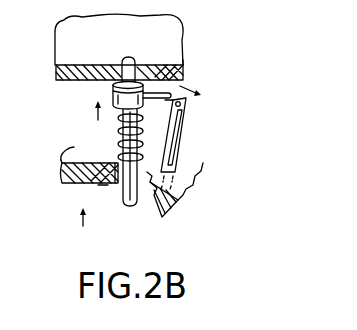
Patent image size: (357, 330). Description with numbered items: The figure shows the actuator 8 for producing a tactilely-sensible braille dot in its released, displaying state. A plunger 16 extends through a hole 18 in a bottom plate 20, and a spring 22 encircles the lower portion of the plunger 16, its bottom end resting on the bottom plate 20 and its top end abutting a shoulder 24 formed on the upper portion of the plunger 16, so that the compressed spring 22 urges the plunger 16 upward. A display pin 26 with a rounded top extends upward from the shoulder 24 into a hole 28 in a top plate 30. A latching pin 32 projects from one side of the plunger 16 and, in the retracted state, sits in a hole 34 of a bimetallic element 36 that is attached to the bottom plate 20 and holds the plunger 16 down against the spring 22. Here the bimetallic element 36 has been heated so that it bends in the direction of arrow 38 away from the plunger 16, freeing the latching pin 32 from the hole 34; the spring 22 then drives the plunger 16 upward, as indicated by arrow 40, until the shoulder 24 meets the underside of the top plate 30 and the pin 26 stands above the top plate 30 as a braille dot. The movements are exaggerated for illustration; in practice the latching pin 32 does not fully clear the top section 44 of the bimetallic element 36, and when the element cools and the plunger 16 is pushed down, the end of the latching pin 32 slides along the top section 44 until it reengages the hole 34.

The actuator 8 is at (115, 222).
The plunger 16 is at (124, 197).
The hole 18 is at (100, 186).
The bottom plate 20 is at (61, 173).
The spring 22 is at (122, 152).
The shoulder 24 is at (113, 96).
The pin 26 is at (130, 57).
The hole 28 is at (161, 90).
The top plate 30 is at (56, 59).
The latching pin 32 is at (184, 63).
The hole 34 is at (185, 104).
The bimetallic element 36 is at (180, 129).
The arrow 38 is at (187, 88).
The arrow 40 is at (96, 113).
The top section 44 is at (169, 101).